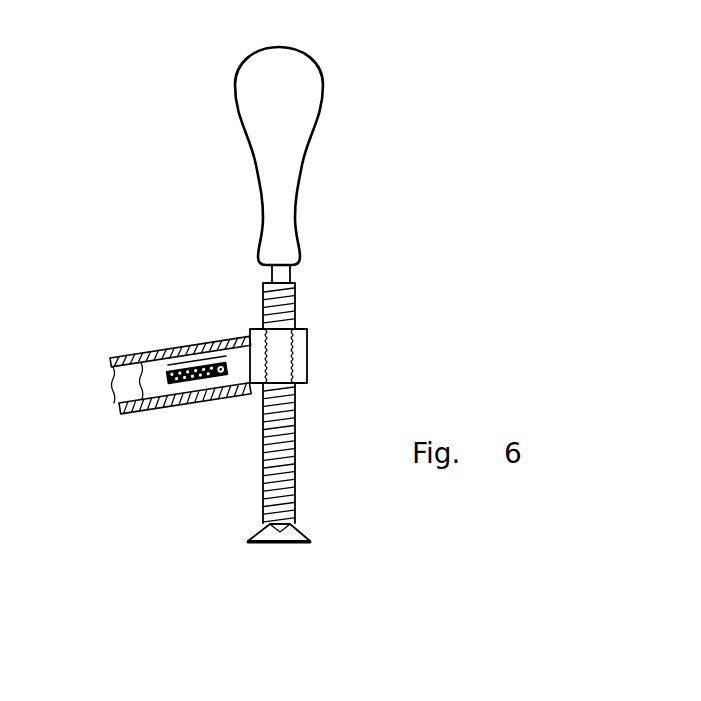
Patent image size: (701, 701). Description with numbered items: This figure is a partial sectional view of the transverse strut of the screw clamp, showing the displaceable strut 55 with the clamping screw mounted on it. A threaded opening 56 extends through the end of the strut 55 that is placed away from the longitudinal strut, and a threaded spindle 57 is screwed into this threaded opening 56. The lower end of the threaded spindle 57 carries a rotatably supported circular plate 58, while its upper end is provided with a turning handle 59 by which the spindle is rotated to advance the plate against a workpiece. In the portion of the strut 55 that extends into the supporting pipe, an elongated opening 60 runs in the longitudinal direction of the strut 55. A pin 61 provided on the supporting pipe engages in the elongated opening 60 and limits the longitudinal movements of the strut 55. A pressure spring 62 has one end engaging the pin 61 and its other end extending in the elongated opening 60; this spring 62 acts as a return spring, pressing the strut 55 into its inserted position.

The strut 55 is at (237, 357).
The threaded opening 56 is at (293, 370).
The threaded spindle 57 is at (295, 497).
The circular plate 58 is at (282, 532).
The turning handle 59 is at (292, 168).
The elongated opening 60 is at (197, 378).
The pin 61 is at (221, 372).
The pressure spring 62 is at (186, 365).